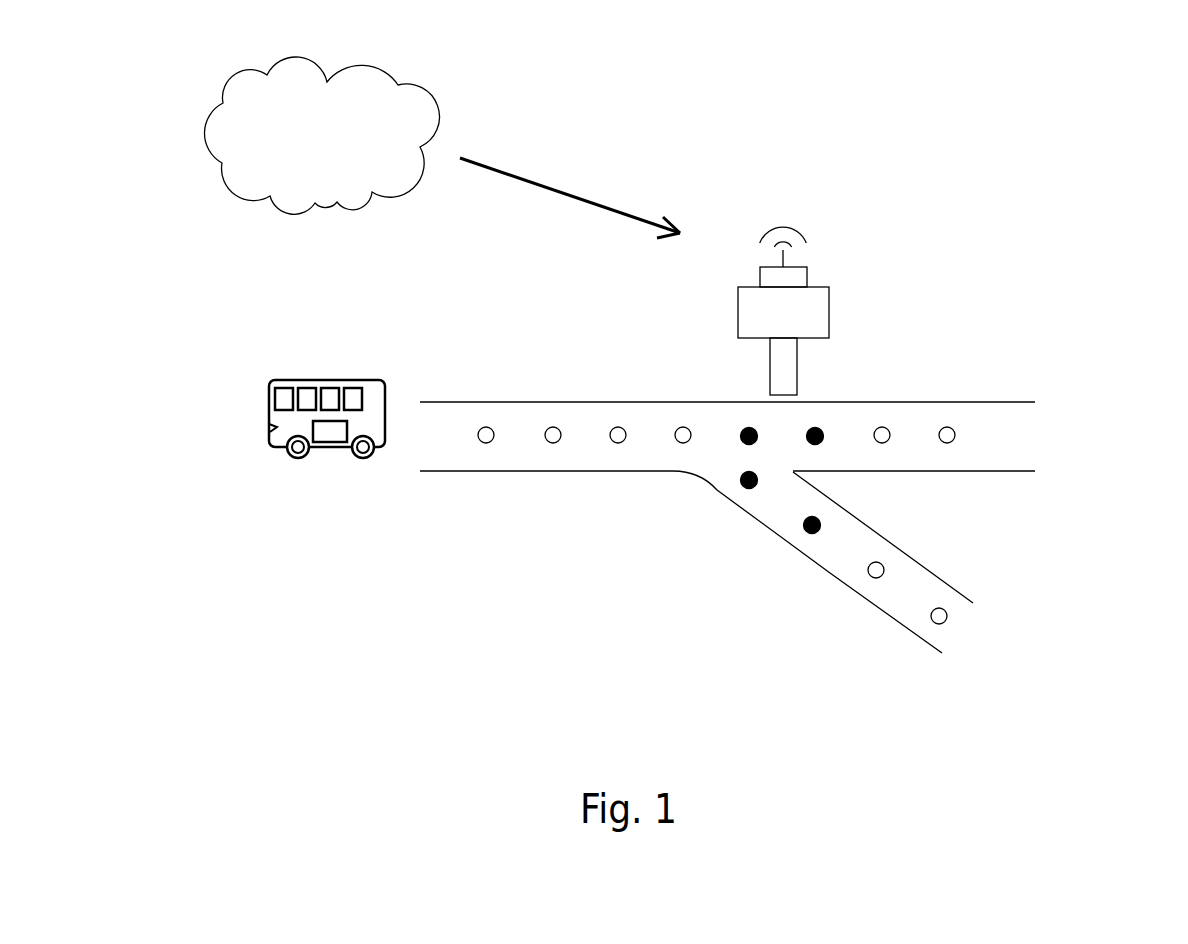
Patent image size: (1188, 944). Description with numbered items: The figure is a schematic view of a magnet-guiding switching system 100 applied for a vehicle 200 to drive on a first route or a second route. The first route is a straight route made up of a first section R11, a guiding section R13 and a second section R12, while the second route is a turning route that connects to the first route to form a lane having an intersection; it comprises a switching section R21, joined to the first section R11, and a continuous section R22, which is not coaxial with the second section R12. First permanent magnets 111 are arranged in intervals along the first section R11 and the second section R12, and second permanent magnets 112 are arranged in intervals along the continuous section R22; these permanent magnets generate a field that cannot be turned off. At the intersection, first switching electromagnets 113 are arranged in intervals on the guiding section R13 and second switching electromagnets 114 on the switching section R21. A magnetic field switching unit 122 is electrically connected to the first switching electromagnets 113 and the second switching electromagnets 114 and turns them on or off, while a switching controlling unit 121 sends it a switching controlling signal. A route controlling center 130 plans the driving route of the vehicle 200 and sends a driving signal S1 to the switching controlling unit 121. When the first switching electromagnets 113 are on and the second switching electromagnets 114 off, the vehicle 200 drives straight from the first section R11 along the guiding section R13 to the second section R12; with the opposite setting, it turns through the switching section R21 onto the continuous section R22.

The magnet-guiding switching system 100 is at (828, 202).
The first permanent magnets 111 is at (552, 443).
The second permanent magnets 112 is at (945, 622).
The first switching electromagnets 113 is at (815, 427).
The second switching electromagnets 114 is at (812, 535).
The switching controlling unit 121 is at (760, 277).
The magnetic field switching unit 122 is at (783, 341).
The route controlling center 130 is at (321, 135).
The vehicle 200 is at (328, 380).
The driving signal S1 is at (570, 198).
The first section R11 is at (507, 413).
The second section R12 is at (983, 413).
The guiding section R13 is at (723, 413).
The switching section R21 is at (750, 502).
The continuous section R22 is at (913, 617).